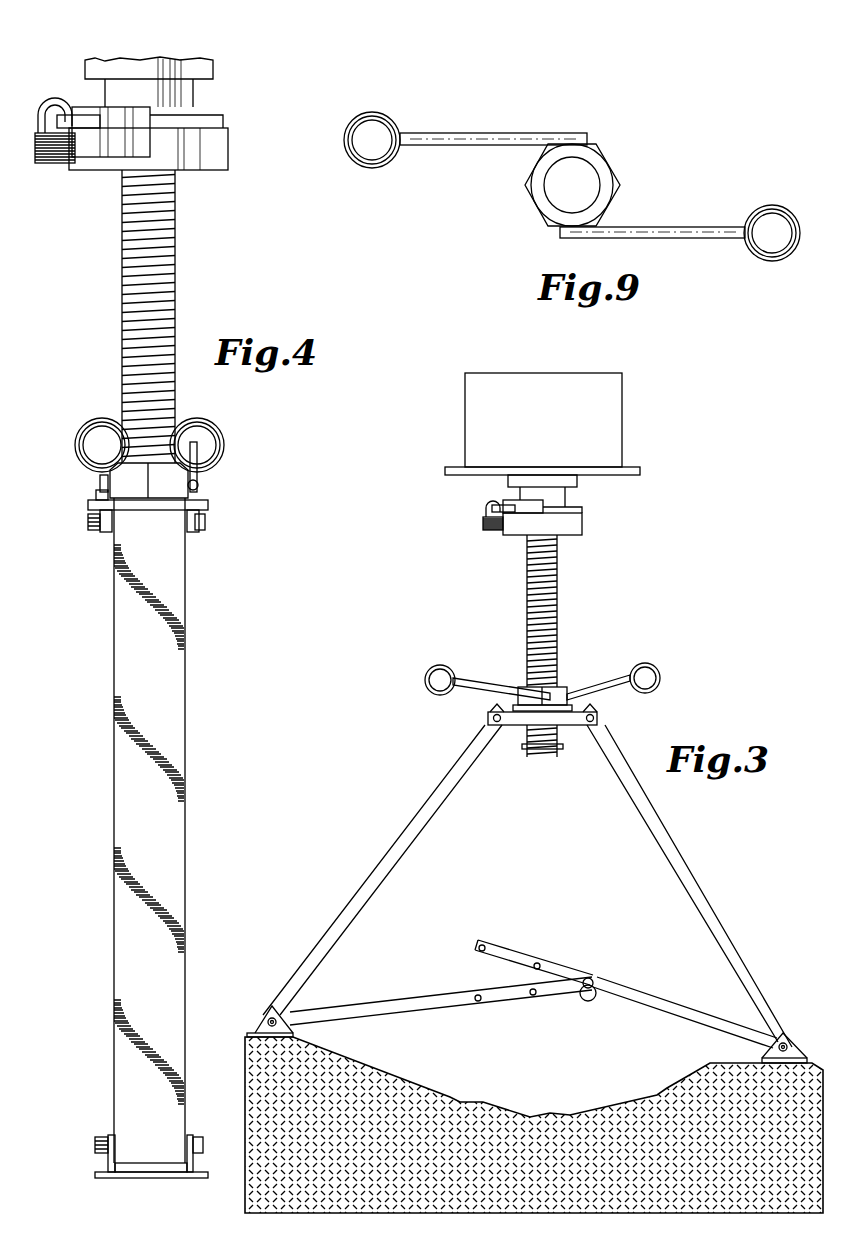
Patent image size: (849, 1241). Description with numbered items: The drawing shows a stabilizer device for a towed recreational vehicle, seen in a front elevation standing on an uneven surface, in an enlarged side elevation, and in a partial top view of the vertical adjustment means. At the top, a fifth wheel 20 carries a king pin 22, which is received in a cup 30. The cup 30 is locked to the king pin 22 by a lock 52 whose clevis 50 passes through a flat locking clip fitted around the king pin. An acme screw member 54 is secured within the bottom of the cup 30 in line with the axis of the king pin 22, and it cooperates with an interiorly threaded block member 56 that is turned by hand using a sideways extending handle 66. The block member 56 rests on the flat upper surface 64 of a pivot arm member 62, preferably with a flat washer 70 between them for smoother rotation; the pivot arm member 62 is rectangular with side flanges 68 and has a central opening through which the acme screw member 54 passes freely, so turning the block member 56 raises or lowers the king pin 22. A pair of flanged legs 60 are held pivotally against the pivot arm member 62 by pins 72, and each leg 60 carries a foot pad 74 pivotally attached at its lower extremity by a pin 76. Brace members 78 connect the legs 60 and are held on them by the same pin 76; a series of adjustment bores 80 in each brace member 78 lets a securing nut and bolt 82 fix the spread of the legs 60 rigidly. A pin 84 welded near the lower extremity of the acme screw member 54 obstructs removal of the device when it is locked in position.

In FIG. 3, the fifth wheel 20 is at (618, 430).
In FIG. 4, the king pin 22 is at (193, 103).
In FIG. 3, the king pin 22 is at (566, 495).
In FIG. 4, the cup 30 is at (228, 147).
In FIG. 4, the clevis 50 is at (52, 100).
In FIG. 4, the lock 52 is at (55, 165).
In FIG. 3, the lock 52 is at (485, 520).
In FIG. 4, the acme screw member 54 is at (180, 266).
In FIG. 3, the acme screw member 54 is at (528, 596).
In FIG. 4, the block member 56 is at (163, 490).
In FIG. 9, the block member 56 is at (608, 162).
In FIG. 3, the block member 56 is at (518, 688).
In FIG. 4, the legs 60 is at (180, 693).
In FIG. 3, the legs 60 is at (378, 865).
In FIG. 4, the pivot arm member 62 is at (210, 503).
In FIG. 3, the pivot arm member 62 is at (508, 727).
In FIG. 4, the flat upper surface 64 is at (100, 492).
In FIG. 3, the flat upper surface 64 is at (492, 708).
In FIG. 4, the handle 66 is at (200, 481).
In FIG. 9, the handle 66 is at (475, 133).
In FIG. 3, the handle 66 is at (485, 683).
In FIG. 4, the side flanges 68 is at (108, 532).
In FIG. 3, the flat washer 70 is at (600, 712).
In FIG. 4, the pins 72 is at (95, 528).
In FIG. 4, the foot pad 74 is at (125, 1180).
In FIG. 3, the foot pad 74 is at (263, 1025).
In FIG. 4, the pin 76 is at (95, 1145).
In FIG. 3, the pin 76 is at (270, 1012).
In FIG. 3, the brace members 78 is at (403, 1000).
In FIG. 3, the adjustment bores 80 is at (482, 945).
In FIG. 3, the securing nut and bolt 82 is at (588, 978).
In FIG. 3, the pin 84 is at (560, 750).